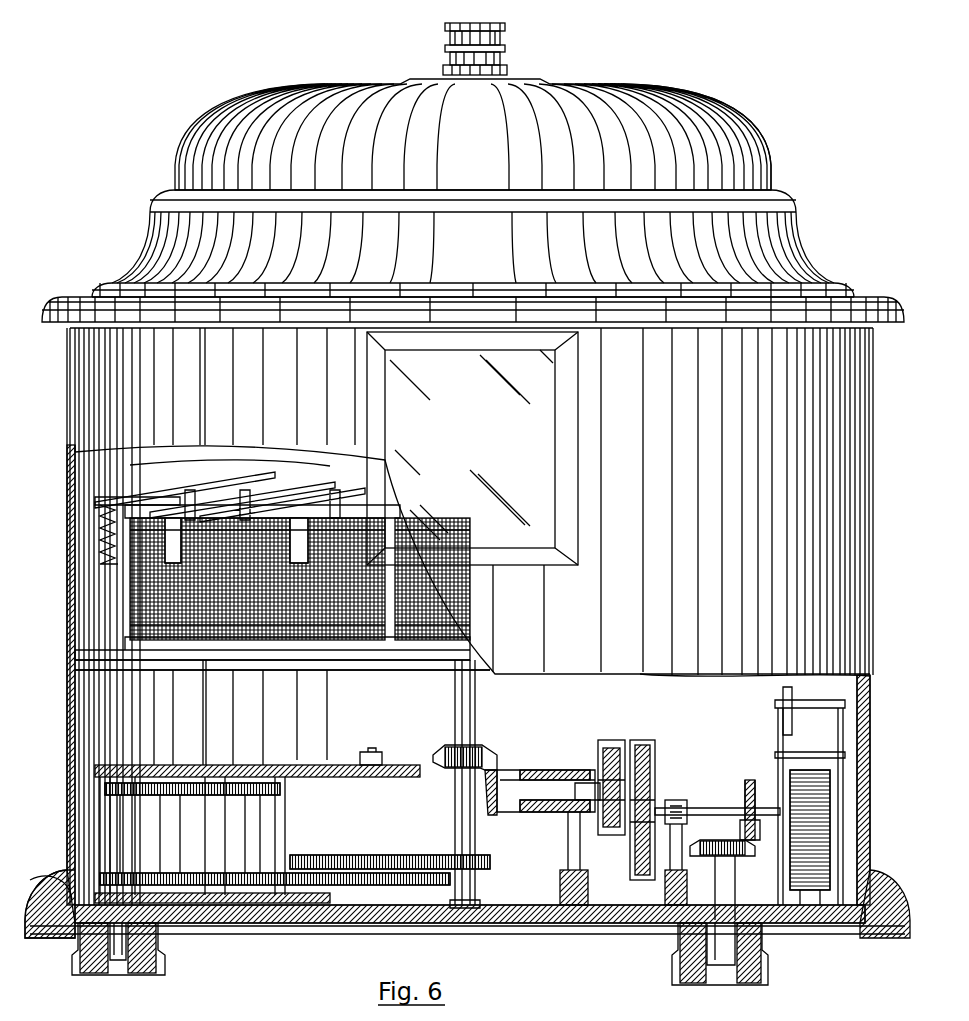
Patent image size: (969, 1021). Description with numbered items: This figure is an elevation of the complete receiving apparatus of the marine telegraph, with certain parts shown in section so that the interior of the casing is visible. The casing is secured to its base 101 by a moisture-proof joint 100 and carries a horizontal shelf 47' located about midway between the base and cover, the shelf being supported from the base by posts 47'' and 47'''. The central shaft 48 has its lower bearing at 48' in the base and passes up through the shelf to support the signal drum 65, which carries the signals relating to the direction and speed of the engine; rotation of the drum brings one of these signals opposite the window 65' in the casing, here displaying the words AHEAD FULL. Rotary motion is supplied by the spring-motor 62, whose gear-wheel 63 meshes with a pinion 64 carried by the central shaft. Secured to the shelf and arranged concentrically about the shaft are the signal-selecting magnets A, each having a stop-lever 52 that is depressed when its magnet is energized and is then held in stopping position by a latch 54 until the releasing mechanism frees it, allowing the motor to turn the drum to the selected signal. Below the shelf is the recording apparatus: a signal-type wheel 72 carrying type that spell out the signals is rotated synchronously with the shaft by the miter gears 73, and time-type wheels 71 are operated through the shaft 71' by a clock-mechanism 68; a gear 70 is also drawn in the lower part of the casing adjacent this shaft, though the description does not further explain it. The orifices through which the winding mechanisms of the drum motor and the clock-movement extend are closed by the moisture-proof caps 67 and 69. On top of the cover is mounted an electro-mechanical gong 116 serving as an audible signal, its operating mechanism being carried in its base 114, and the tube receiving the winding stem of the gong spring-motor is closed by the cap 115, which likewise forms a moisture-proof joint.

The cap 115 is at (507, 27).
The electro-mechanical gong 116 is at (634, 90).
The base of gong 114 is at (542, 268).
The signal drum 65 is at (109, 523).
The window 65' is at (502, 448).
The latch 54 is at (318, 470).
The stop-lever 52 is at (345, 492).
The position-controlling or signal-selecting magnets A is at (130, 605).
The horizontal shelf 47' is at (272, 677).
The posts 47'' is at (282, 696).
The partition 47''' is at (755, 701).
The central shaft 48 is at (483, 782).
The bearing 48' is at (481, 895).
The miter gears 73 is at (492, 748).
The signal-type wheel 72 is at (606, 740).
The time-type wheels 71 is at (649, 790).
The shaft 71' is at (717, 836).
The gear 70 is at (722, 868).
The clock-mechanism 68 is at (846, 742).
The cap 69 is at (733, 959).
The moisture-proof joint 100 is at (858, 940).
The cap 67 is at (132, 975).
The spring-motor 62 is at (356, 766).
The gear-wheel 63 is at (415, 858).
The pinion 64 is at (482, 860).
The base 101 is at (432, 925).